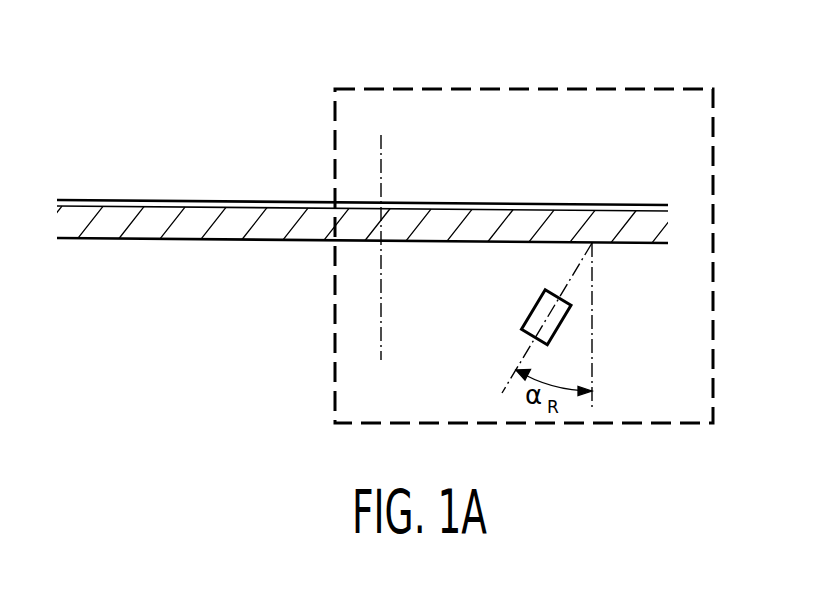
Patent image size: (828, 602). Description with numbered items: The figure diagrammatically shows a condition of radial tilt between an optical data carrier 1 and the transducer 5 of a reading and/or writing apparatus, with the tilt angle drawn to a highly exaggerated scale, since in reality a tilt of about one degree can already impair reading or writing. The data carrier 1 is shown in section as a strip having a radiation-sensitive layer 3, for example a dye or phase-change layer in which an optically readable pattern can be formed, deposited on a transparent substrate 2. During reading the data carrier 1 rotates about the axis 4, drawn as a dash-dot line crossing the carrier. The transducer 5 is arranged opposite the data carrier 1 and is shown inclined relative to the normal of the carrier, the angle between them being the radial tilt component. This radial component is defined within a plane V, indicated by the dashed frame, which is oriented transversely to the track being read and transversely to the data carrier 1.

The optical data carrier 1 is at (357, 236).
The transparent substrate 2 is at (268, 231).
The radiation-sensitive layer 3 is at (213, 202).
The axis 4 is at (381, 177).
The transducer 5 is at (530, 309).
The plane V is at (497, 88).